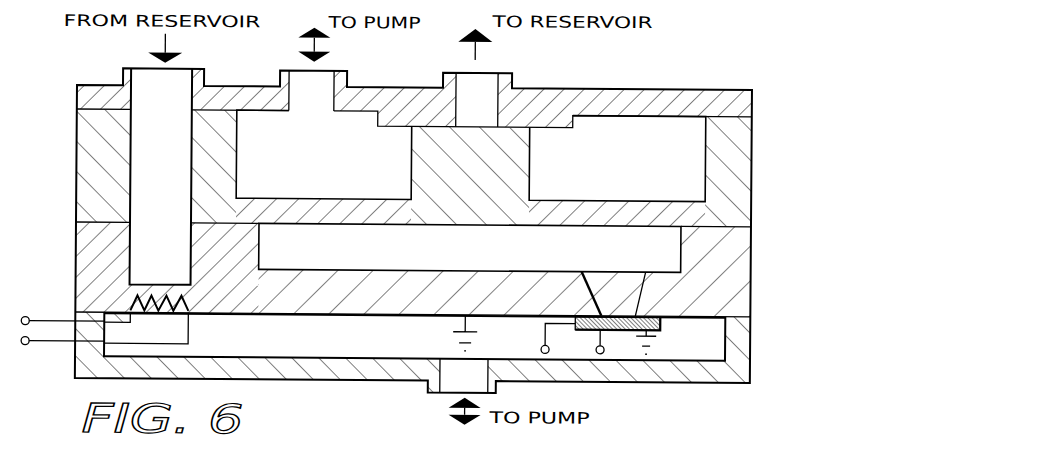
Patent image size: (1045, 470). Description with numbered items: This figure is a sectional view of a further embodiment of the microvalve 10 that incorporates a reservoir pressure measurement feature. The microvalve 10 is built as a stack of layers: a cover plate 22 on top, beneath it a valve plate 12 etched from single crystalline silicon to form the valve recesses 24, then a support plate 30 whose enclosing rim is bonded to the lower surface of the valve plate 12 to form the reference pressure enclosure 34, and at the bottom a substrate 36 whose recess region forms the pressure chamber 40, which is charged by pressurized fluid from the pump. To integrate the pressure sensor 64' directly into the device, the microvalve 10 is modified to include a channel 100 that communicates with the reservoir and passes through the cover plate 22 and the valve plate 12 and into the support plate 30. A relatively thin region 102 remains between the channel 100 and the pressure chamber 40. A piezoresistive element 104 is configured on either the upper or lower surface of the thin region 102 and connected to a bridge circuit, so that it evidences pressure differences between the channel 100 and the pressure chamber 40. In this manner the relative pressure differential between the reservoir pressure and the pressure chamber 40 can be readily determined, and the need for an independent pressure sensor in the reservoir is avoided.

The microvalve 10 is at (695, 57).
The cover plate 22 is at (755, 96).
The valve plate 12 is at (774, 217).
The valve recesses 24 is at (371, 166).
The channel 100 is at (179, 163).
The reference pressure enclosure 34 is at (513, 253).
The support plate 30 is at (774, 307).
The substrate 36 is at (774, 377).
The pressure chamber 40 is at (316, 344).
The pressure sensor 64' is at (159, 270).
The piezoresistive element 104 is at (181, 286).
The thin region 102 is at (203, 283).